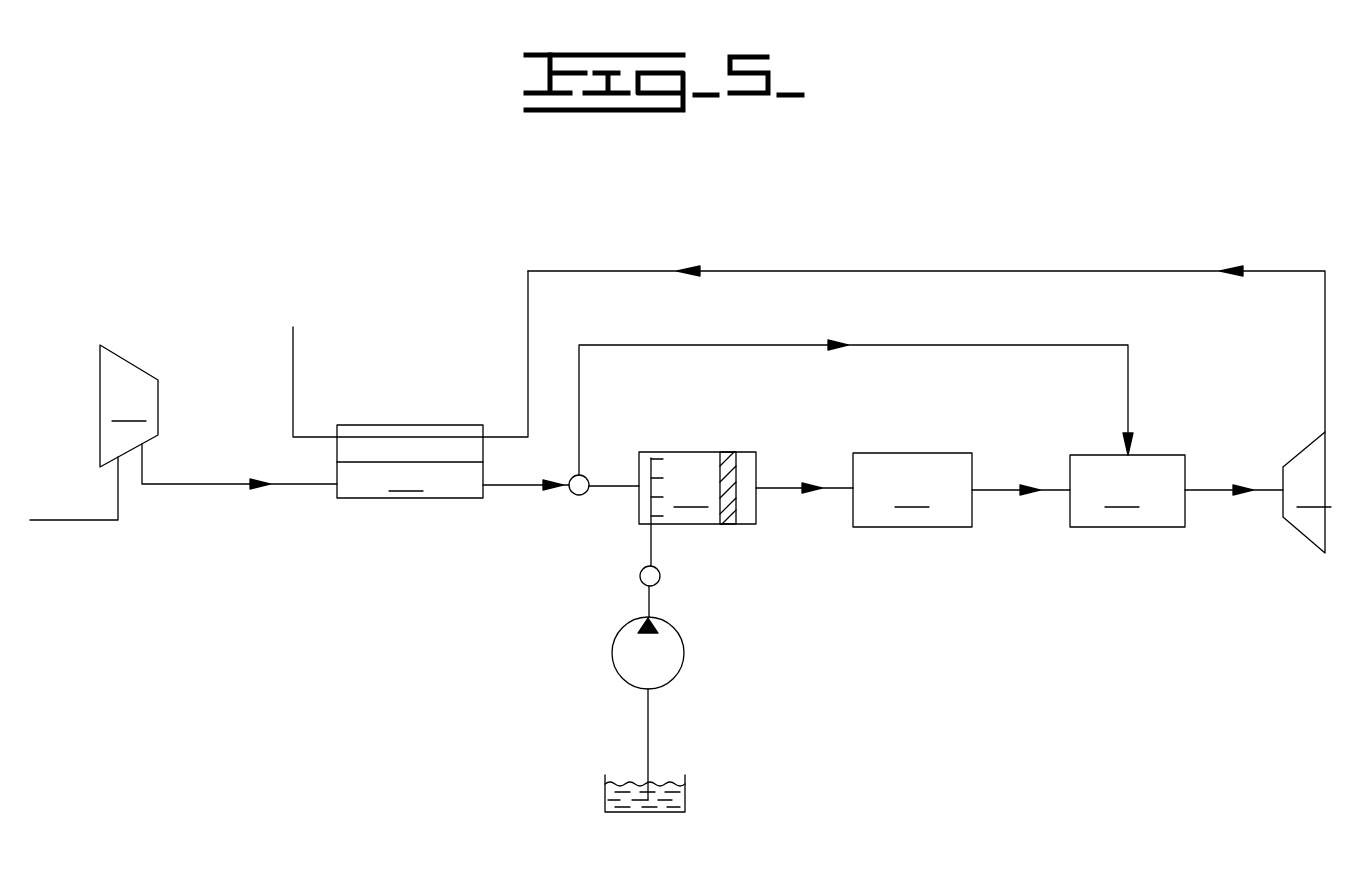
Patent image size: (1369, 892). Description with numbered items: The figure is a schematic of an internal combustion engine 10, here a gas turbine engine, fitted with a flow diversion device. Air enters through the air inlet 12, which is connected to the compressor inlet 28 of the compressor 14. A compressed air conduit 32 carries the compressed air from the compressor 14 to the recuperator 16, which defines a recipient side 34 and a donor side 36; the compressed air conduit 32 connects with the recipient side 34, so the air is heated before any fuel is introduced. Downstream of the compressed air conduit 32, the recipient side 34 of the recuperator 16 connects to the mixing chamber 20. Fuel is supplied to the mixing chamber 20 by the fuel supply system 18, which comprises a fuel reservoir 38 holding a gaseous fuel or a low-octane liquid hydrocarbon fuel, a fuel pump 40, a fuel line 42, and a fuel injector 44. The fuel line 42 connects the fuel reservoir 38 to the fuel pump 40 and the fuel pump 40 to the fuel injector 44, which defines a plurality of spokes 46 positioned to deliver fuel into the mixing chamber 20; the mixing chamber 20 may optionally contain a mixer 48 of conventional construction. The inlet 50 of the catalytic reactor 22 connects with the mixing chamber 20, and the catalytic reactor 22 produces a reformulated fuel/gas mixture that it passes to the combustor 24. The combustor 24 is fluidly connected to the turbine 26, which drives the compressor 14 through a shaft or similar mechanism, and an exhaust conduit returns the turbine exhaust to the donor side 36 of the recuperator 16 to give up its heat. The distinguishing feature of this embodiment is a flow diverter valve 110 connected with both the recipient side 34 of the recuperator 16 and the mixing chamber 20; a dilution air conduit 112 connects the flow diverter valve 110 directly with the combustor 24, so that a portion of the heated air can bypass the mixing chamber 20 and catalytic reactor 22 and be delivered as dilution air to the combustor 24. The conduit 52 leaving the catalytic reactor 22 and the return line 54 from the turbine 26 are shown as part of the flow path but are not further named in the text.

The internal combustion engine 10 is at (788, 220).
The air inlet 12 is at (73, 520).
The compressor 14 is at (129, 406).
The recuperator 16 is at (410, 461).
The fuel supply system 18 is at (485, 673).
The mixing chamber 20 is at (721, 460).
The catalytic reactor 22 is at (912, 490).
The combustor 24 is at (1176, 491).
The turbine 26 is at (1307, 492).
The compressor inlet 28 is at (122, 455).
The compressed air conduit 32 is at (237, 484).
The recipient side 34 is at (410, 498).
The donor side 36 is at (402, 425).
The fuel reservoir 38 is at (630, 812).
The fuel pump 40 is at (677, 678).
The fuel line 42 is at (648, 738).
The fuel injector 44 is at (660, 573).
The spokes 46 is at (657, 458).
The mixer 48 is at (728, 452).
The inlet 50 is at (850, 490).
The reactor outlet conduit 52 is at (973, 492).
The exhaust recirculation line 54 is at (935, 271).
The flow diverter valve 110 is at (579, 495).
The dilution air conduit 112 is at (972, 345).